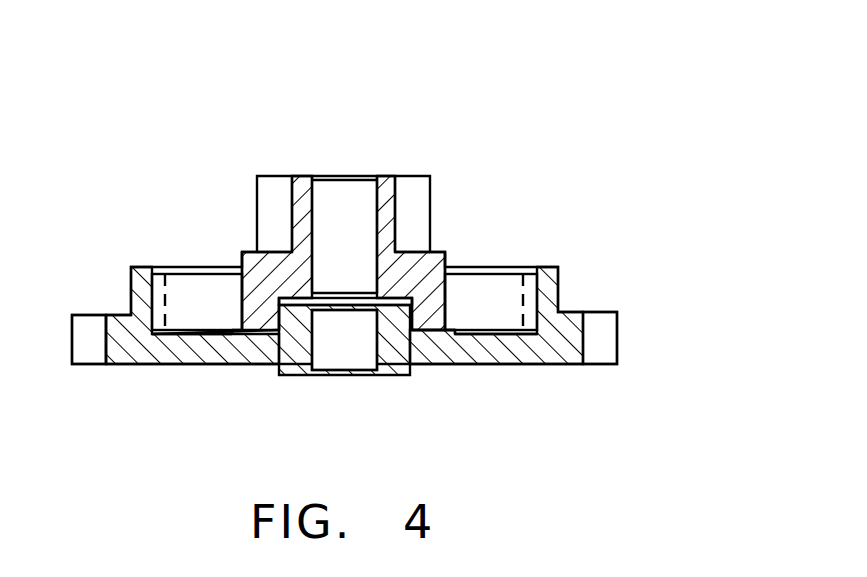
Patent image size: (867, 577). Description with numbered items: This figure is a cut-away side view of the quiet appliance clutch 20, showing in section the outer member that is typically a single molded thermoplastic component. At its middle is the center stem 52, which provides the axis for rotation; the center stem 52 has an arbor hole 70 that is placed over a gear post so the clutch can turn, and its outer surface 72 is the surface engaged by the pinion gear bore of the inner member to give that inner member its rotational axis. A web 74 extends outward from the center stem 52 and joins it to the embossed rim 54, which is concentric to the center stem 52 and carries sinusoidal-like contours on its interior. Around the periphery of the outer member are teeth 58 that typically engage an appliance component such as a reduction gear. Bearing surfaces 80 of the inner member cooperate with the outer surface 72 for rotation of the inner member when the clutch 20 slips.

The quiet appliance clutch 20 is at (344, 110).
The center stem 52 is at (420, 362).
The embossed rim 54 is at (547, 275).
The teeth 58 is at (600, 340).
The arbor hole 70 is at (335, 352).
The outer surface 72 is at (287, 330).
The web 74 is at (165, 353).
The bearing surfaces 80 is at (383, 296).